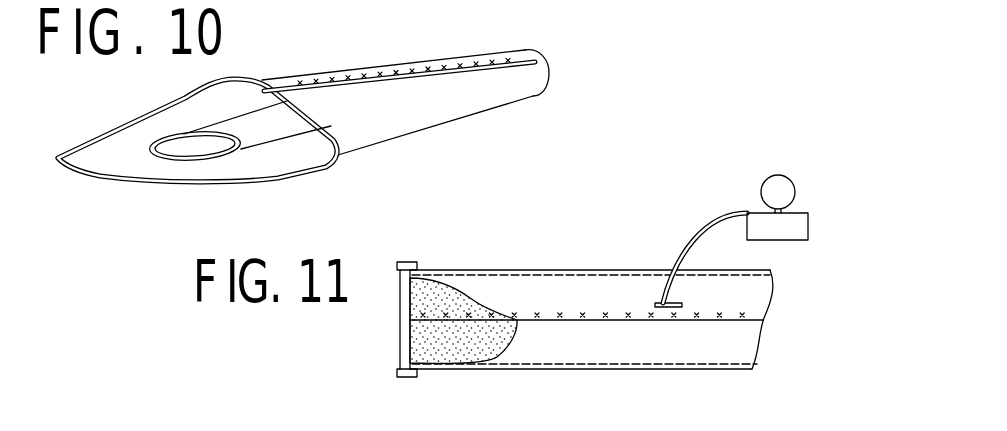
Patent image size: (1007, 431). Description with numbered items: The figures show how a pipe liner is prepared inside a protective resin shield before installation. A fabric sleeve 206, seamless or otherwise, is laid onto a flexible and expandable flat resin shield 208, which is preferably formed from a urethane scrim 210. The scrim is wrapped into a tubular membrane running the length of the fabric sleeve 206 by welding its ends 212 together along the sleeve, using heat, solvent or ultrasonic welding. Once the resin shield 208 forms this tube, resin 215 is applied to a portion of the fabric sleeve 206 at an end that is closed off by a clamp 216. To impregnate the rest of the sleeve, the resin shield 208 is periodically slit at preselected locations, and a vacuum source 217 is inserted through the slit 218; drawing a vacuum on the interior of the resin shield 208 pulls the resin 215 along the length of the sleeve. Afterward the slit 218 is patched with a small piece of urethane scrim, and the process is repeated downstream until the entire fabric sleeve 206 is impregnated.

In FIG. 10, the fabric sleeve 206 is at (193, 131).
In FIG. 11, the fabric sleeve 206 is at (571, 288).
In FIG. 10, the resin shield 208 is at (272, 160).
In FIG. 11, the resin shield 208 is at (505, 270).
In FIG. 10, the urethane scrim 210 is at (519, 92).
In FIG. 10, the ends 212 is at (445, 73).
In FIG. 11, the ends 212 is at (615, 320).
In FIG. 11, the resin 215 is at (430, 337).
In FIG. 11, the clamp 216 is at (409, 265).
In FIG. 11, the vacuum source 217 is at (809, 228).
In FIG. 11, the slit 218 is at (690, 283).